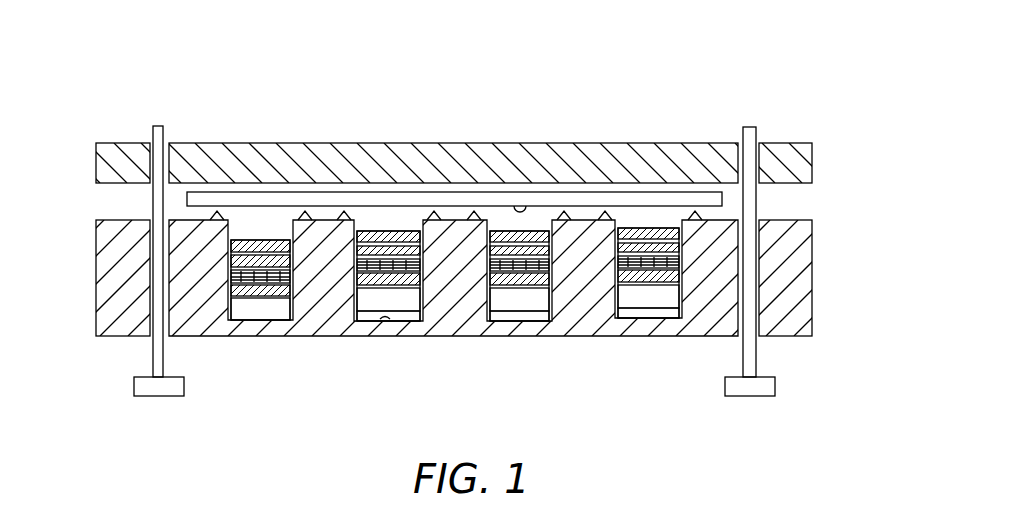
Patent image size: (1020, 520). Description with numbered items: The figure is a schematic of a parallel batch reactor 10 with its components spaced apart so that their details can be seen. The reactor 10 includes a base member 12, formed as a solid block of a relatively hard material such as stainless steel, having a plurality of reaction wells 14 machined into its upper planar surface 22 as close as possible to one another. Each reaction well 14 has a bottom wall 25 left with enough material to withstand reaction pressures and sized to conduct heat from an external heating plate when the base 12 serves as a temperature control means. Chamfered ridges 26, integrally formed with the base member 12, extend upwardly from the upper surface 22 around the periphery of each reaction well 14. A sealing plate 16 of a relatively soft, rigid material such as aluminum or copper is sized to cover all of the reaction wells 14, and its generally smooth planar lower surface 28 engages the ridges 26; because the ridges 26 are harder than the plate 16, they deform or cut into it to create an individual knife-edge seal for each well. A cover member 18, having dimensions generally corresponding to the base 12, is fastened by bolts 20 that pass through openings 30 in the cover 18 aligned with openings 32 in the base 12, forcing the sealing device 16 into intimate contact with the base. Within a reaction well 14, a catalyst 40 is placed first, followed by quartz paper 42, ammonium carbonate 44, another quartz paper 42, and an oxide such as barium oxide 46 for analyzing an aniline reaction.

The parallel batch reactor 10 is at (617, 73).
The base member 12 is at (210, 326).
The reaction wells 14 is at (233, 230).
The sealing device (plate) 16 is at (449, 192).
The cover member 18 is at (345, 150).
The bolts 20 is at (153, 197).
The upper surface 22 is at (118, 220).
The bottom wall 25 is at (387, 318).
The chamfered ridges 26 is at (434, 212).
The lower surface 28 is at (527, 205).
The openings 30 is at (758, 142).
The openings 32 is at (683, 232).
The catalyst 40 is at (655, 300).
The quartz paper 42 is at (683, 276).
The ammonium carbonate 44 is at (683, 262).
The metal oxide 46 is at (695, 214).